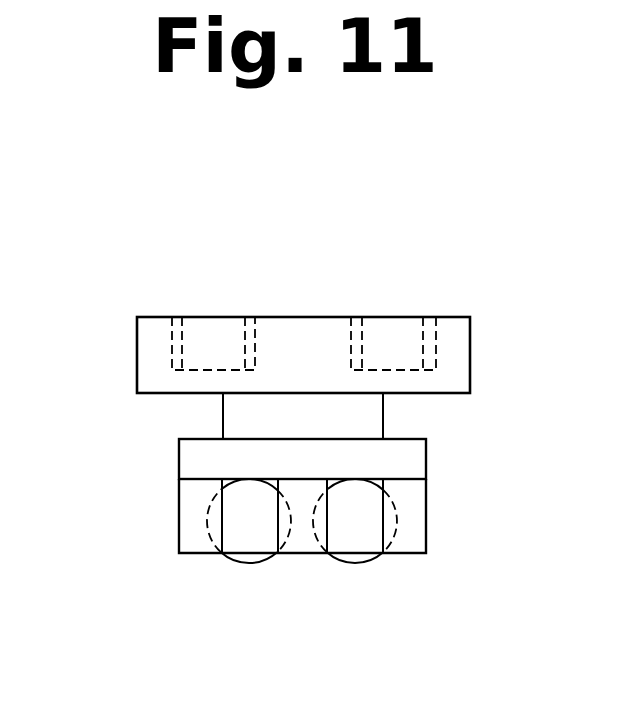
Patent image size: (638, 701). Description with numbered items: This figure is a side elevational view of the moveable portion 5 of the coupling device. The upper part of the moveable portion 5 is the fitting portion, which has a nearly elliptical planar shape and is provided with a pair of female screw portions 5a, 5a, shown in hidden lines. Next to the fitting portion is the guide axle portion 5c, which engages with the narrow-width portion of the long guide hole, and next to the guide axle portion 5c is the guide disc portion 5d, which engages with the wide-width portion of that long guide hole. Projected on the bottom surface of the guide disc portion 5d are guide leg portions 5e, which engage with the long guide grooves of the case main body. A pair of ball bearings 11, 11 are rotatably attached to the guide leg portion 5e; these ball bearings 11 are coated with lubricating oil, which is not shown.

The moveable portion 5 is at (291, 312).
The female screw portion 5a is at (180, 353).
The guide axle portion 5c is at (248, 415).
The guide disc portion 5d is at (157, 375).
The guide leg portion 5e is at (197, 542).
The ball bearing 11 is at (243, 538).